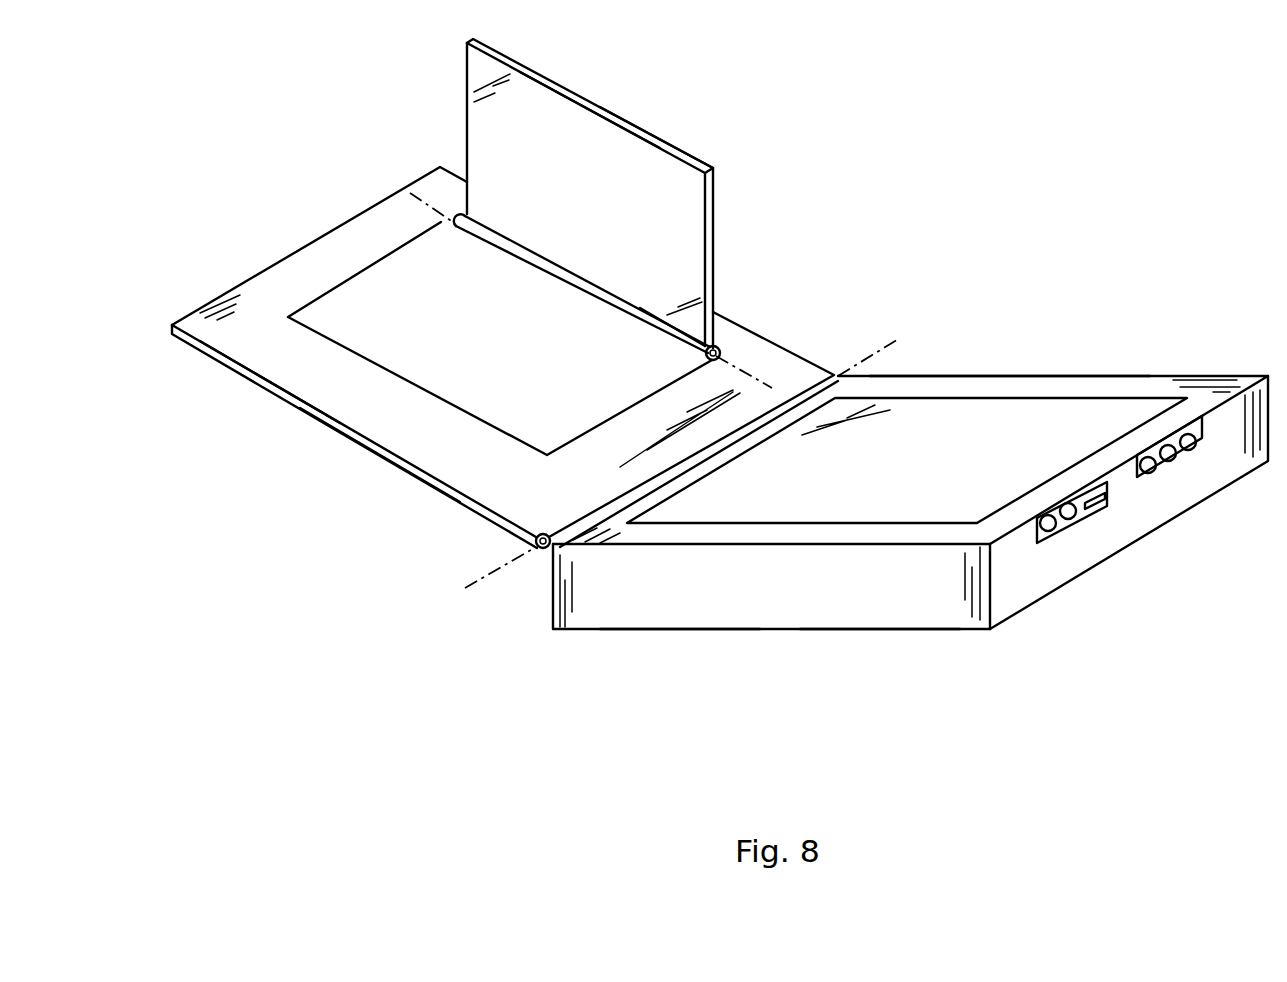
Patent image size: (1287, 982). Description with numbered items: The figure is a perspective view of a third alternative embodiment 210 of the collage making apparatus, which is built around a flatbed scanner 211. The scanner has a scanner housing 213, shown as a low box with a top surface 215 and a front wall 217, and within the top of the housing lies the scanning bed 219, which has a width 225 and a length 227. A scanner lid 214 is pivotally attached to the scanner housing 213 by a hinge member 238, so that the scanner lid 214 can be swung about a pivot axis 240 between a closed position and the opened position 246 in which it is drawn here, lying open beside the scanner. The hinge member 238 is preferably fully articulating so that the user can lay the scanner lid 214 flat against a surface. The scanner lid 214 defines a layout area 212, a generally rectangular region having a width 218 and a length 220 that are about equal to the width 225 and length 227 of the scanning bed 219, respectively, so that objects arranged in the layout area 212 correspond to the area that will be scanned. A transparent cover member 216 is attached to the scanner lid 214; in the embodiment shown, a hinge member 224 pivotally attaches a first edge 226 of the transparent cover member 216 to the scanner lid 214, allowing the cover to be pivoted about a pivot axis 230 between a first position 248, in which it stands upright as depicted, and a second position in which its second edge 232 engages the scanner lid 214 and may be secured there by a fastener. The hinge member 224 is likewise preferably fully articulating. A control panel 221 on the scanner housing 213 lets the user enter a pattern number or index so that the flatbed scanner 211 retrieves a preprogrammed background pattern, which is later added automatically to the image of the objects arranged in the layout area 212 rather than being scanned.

The collage making apparatus 210 is at (273, 267).
The flatbed scanner 211 is at (1069, 580).
The layout area 212 is at (528, 405).
The scanner housing 213 is at (890, 630).
The scanner lid 214 is at (358, 440).
The base top surface 215 is at (1017, 375).
The transparent cover member 216 is at (557, 177).
The base front wall 217 is at (672, 631).
The width 218 is at (522, 262).
The scanning bed 219 is at (785, 508).
The length 220 is at (660, 385).
The control panel 221 is at (1131, 489).
The hinge member 224 is at (719, 345).
The width 225 is at (1093, 398).
The first edge 226 is at (660, 314).
The length 227 is at (1093, 450).
The pivot axis 230 is at (761, 378).
The second edge 232 is at (608, 117).
The hinge member 238 is at (535, 541).
The pivot axis 240 is at (505, 568).
The opened position 246 is at (273, 382).
The first position 248 is at (653, 132).